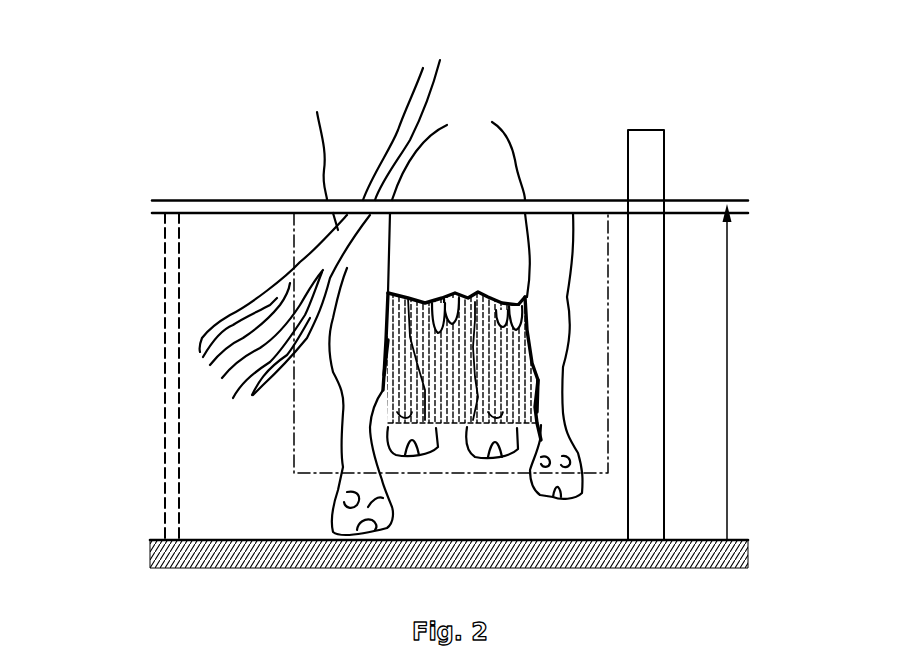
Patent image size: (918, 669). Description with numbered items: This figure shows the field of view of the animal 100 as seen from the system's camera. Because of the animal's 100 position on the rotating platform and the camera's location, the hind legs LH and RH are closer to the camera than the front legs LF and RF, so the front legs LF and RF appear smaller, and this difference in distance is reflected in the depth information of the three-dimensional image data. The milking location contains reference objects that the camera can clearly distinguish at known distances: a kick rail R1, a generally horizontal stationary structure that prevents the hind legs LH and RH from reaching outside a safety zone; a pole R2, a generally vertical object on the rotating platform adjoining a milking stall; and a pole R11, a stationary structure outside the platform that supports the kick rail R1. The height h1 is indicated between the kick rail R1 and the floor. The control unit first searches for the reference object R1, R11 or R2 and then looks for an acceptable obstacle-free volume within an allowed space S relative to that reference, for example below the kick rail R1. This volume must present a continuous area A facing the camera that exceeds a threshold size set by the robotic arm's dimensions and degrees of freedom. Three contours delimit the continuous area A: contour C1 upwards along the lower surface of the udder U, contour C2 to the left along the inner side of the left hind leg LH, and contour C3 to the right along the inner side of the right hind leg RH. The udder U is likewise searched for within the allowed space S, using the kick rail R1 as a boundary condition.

The animal 100 is at (358, 72).
The kick rail R1 is at (310, 205).
The pole R2 is at (652, 163).
The pole supporting the kick rail R11 is at (172, 312).
The udder U is at (470, 270).
The contour C1 is at (457, 297).
The continuous area A is at (460, 368).
The left hind leg LH is at (342, 374).
The right hind leg RH is at (571, 356).
The contour C2 is at (383, 355).
The contour C3 is at (538, 375).
The height of rail h1 is at (715, 372).
The allowed space S is at (608, 445).
The left front leg LF is at (423, 438).
The right front leg RF is at (477, 440).